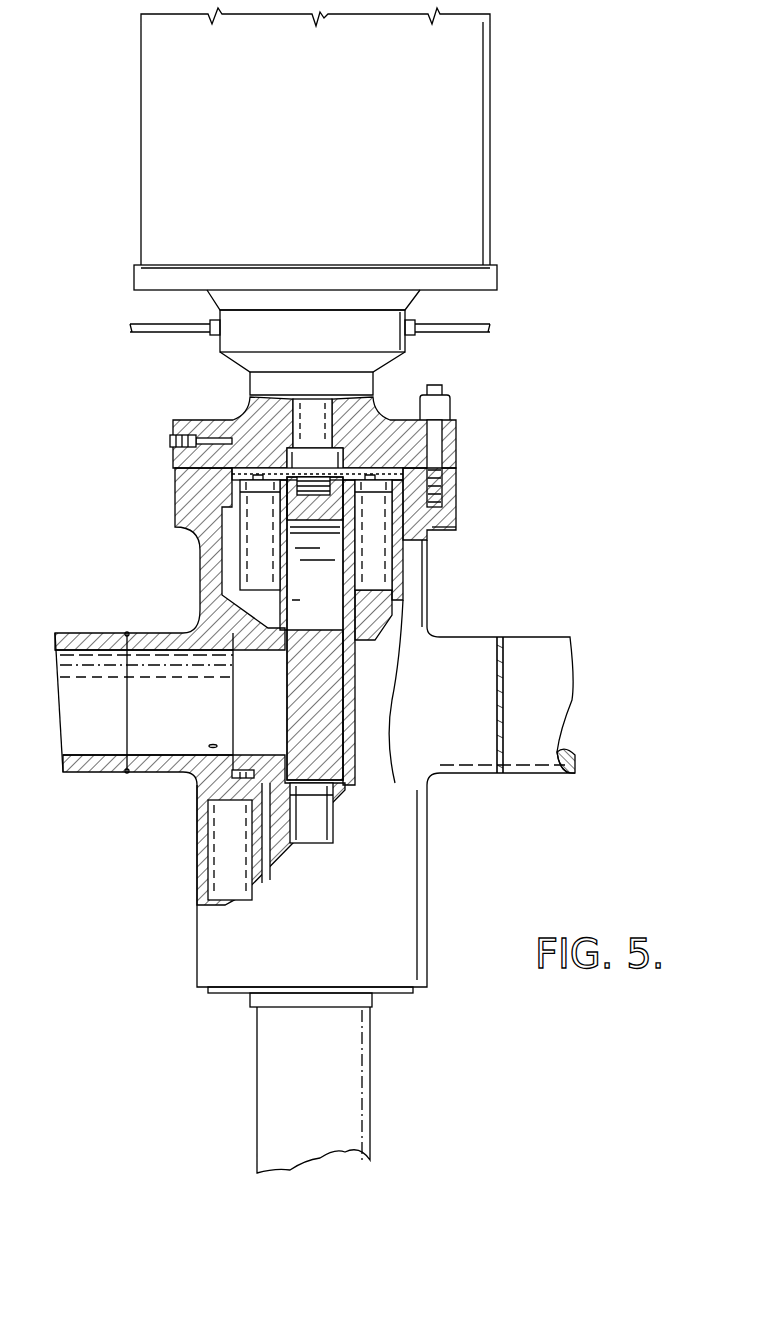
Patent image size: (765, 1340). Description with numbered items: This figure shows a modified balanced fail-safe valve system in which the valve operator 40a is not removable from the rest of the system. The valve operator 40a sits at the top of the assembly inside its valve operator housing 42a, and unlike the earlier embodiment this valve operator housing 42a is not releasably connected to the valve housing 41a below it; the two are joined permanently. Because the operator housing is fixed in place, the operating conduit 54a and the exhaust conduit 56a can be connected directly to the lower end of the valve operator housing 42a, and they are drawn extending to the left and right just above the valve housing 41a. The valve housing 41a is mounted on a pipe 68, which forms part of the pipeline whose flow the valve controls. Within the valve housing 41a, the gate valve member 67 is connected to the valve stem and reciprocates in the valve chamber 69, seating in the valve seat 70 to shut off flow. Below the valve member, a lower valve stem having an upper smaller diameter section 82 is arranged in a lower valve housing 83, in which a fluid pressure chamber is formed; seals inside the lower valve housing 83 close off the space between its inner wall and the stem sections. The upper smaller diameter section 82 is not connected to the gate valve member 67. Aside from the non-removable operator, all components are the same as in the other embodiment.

The valve operator 40a is at (342, 118).
The valve operator housing 42a is at (460, 149).
The operating conduit 54a is at (143, 328).
The exhaust conduit 56a is at (467, 327).
The valve housing 41a is at (190, 498).
The gate valve member 67 is at (313, 690).
The pipe 68 is at (545, 655).
The valve chamber 69 is at (262, 838).
The valve seat 70 is at (233, 765).
The upper smaller diameter section 82 is at (313, 807).
The lower valve housing 83 is at (330, 1078).